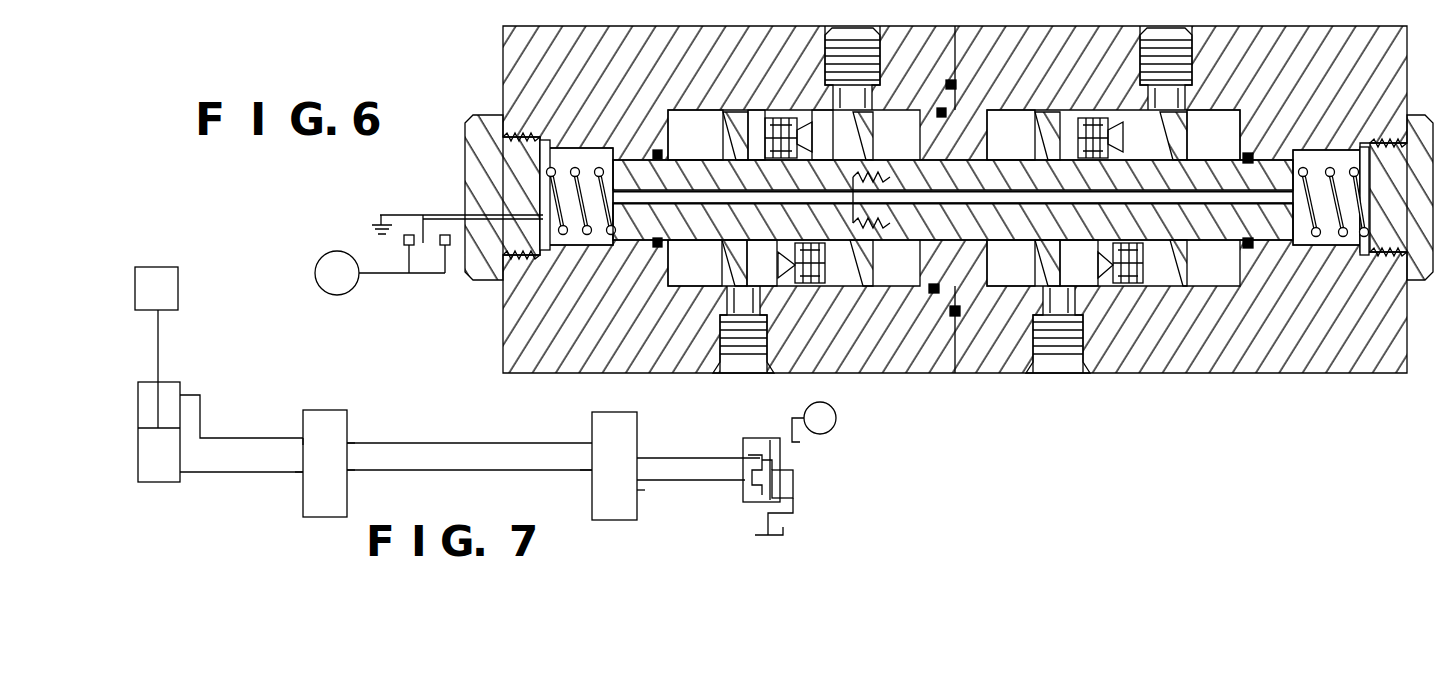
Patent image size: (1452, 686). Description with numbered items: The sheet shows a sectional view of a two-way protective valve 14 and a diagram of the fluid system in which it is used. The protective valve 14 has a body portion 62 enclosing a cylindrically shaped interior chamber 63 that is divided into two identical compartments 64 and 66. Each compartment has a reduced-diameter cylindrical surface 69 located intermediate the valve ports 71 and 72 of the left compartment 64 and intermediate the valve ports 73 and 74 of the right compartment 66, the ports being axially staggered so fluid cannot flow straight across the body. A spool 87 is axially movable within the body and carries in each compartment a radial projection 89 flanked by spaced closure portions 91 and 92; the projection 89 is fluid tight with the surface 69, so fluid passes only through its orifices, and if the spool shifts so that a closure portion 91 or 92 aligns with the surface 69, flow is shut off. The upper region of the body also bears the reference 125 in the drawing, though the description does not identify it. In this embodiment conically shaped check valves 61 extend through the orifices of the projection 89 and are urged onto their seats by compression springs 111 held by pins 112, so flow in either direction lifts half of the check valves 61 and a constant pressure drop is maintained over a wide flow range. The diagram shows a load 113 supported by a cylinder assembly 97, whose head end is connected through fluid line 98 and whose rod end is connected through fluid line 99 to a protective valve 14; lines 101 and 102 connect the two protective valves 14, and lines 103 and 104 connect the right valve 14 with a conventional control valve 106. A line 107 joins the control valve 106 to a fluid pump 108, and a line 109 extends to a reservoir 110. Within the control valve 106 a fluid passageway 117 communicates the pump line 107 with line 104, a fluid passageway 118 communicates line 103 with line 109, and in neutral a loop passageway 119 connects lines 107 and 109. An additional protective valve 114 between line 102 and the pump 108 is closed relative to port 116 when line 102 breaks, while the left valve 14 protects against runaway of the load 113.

In FIG. 6, the protective valve 14 is at (955, 201).
In FIG. 7, the protective valve 14 is at (328, 510).
In FIG. 6, the check valve 61 is at (778, 252).
In FIG. 6, the valve body 62 is at (978, 365).
In FIG. 6, the interior chamber 63 is at (1192, 118).
In FIG. 6, the compartment 64 is at (695, 135).
In FIG. 6, the compartment 66 is at (1007, 135).
In FIG. 6, the cylindrical surface 69 is at (768, 110).
In FIG. 6, the valve port 71 is at (845, 45).
In FIG. 7, the valve port 71 is at (303, 472).
In FIG. 6, the valve port 72 is at (735, 355).
In FIG. 7, the valve port 72 is at (347, 472).
In FIG. 6, the valve port 73 is at (1175, 32).
In FIG. 7, the valve port 73 is at (303, 438).
In FIG. 6, the valve port 74 is at (1065, 360).
In FIG. 7, the valve port 74 is at (348, 443).
In FIG. 6, the spool 87 is at (712, 232).
In FIG. 6, the radial projection 89 is at (812, 118).
In FIG. 6, the closure portion 91 is at (1037, 262).
In FIG. 6, the closure portion 92 is at (866, 135).
In FIG. 7, the cylinder assembly 97 is at (160, 478).
In FIG. 7, the fluid line 98 is at (243, 472).
In FIG. 7, the fluid line 99 is at (250, 438).
In FIG. 7, the line 101 is at (510, 443).
In FIG. 7, the line 102 is at (450, 472).
In FIG. 7, the line 103 is at (657, 450).
In FIG. 7, the line 104 is at (668, 480).
In FIG. 7, the control valve 106 is at (788, 455).
In FIG. 7, the line 107 is at (802, 446).
In FIG. 7, the fluid pump 108 is at (835, 420).
In FIG. 7, the line 109 is at (793, 505).
In FIG. 7, the reservoir 110 is at (785, 535).
In FIG. 6, the compression spring 111 is at (782, 112).
In FIG. 6, the pin 112 is at (1130, 286).
In FIG. 7, the load 113 is at (172, 278).
In FIG. 7, the additional protective valve 114 is at (590, 472).
In FIG. 7, the port 116 is at (645, 490).
In FIG. 7, the fluid passageway 117 is at (760, 440).
In FIG. 7, the fluid passageway 118 is at (752, 465).
In FIG. 7, the loop passageway 119 is at (795, 490).
In FIG. 6, the spool 125 is at (942, 143).